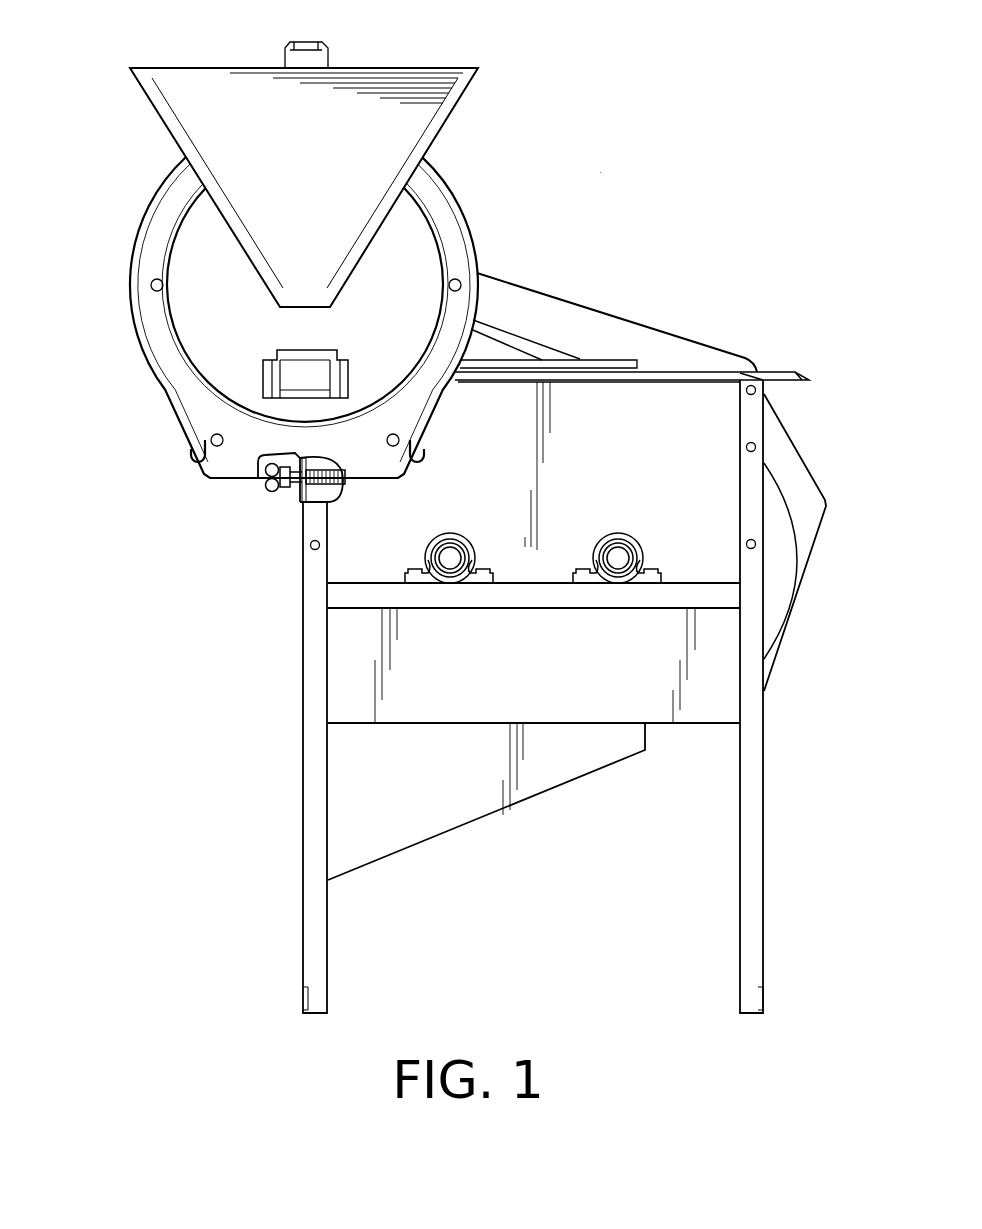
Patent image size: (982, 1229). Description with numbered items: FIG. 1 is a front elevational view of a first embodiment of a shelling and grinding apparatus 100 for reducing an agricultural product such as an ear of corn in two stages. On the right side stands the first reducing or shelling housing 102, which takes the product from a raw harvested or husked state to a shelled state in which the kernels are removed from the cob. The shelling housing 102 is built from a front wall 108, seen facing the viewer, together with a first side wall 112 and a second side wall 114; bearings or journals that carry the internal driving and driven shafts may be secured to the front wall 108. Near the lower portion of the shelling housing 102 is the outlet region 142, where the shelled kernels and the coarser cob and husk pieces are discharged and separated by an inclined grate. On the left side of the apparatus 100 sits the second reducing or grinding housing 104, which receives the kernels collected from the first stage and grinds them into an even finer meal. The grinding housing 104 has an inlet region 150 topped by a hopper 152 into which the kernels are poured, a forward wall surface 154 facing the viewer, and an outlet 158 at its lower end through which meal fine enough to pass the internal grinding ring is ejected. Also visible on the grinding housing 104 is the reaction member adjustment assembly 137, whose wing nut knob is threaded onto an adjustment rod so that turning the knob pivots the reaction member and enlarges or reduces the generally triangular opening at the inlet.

The shelling and grinding apparatus 100 is at (600, 173).
The first reducing or shelling housing 102 is at (840, 358).
The second reducing or grinding housing 104 is at (108, 47).
The front wall 108 is at (632, 469).
The first side wall 112 is at (295, 592).
The second side wall 114 is at (784, 601).
The reaction member adjustment assembly 137 is at (292, 487).
The outlet region 142 is at (295, 813).
The inlet region 150 is at (317, 230).
The hopper 152 is at (228, 93).
The forward wall surface 154 is at (360, 334).
The outlet 158 is at (223, 490).